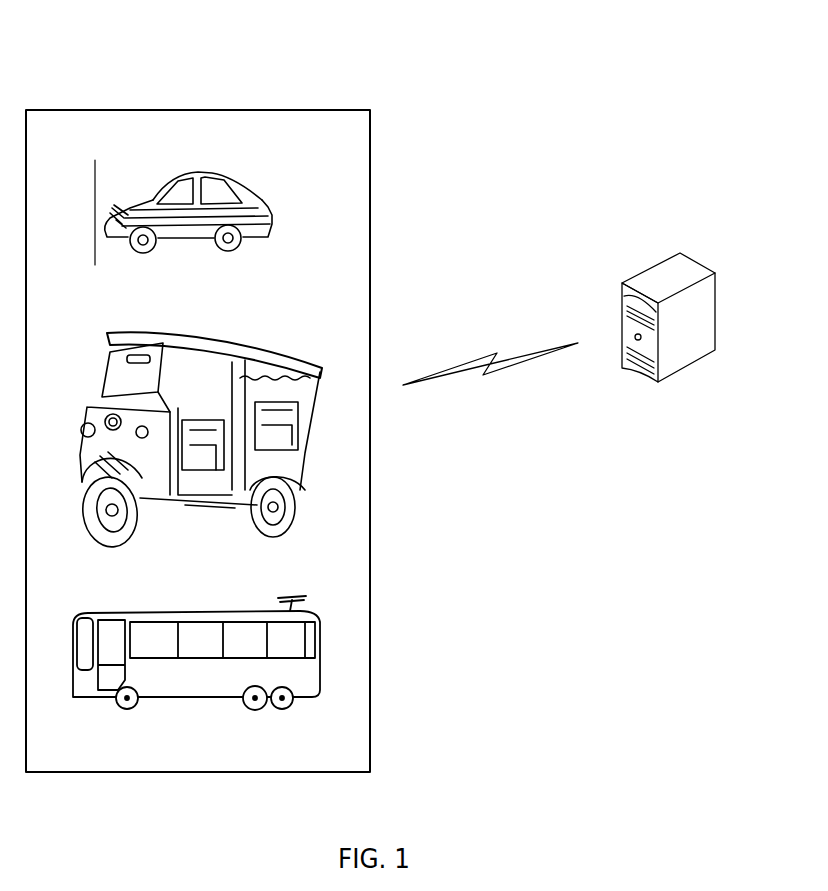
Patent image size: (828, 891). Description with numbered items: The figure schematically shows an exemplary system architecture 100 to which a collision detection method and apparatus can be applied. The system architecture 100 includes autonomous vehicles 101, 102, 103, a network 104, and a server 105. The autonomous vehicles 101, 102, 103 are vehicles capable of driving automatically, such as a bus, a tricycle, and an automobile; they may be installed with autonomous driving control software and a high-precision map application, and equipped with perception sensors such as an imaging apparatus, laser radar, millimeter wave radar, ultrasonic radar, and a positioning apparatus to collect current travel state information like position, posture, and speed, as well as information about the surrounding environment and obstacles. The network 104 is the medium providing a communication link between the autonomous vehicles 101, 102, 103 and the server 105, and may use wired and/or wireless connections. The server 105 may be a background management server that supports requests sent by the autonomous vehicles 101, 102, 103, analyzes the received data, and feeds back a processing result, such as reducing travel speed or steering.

The system architecture 100 is at (137, 45).
The autonomous vehicle 101 is at (196, 673).
The autonomous vehicle 102 is at (200, 449).
The autonomous vehicle 103 is at (183, 226).
The network 104 is at (490, 383).
The server 105 is at (668, 345).